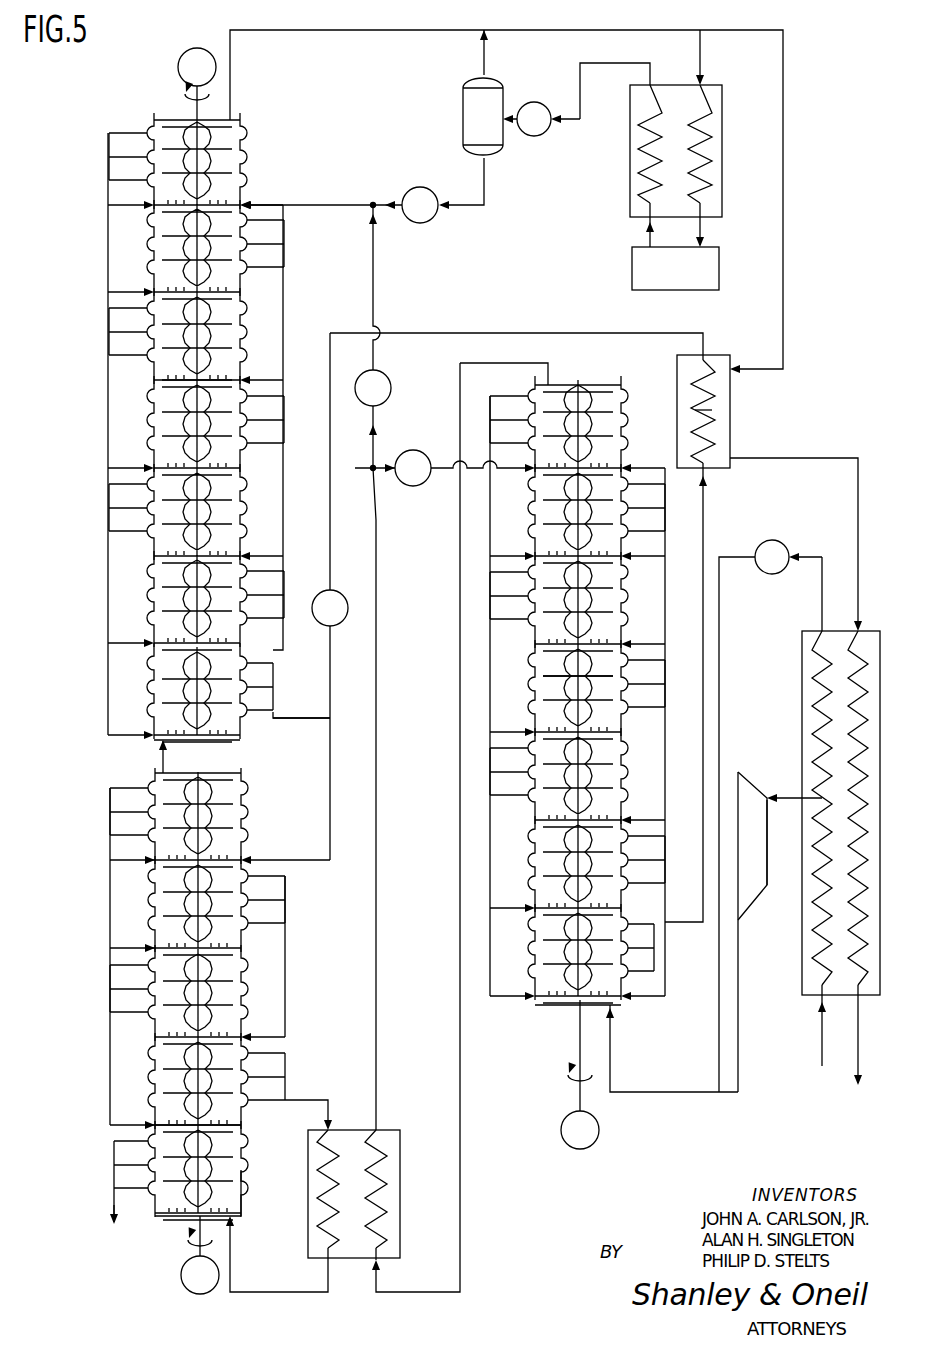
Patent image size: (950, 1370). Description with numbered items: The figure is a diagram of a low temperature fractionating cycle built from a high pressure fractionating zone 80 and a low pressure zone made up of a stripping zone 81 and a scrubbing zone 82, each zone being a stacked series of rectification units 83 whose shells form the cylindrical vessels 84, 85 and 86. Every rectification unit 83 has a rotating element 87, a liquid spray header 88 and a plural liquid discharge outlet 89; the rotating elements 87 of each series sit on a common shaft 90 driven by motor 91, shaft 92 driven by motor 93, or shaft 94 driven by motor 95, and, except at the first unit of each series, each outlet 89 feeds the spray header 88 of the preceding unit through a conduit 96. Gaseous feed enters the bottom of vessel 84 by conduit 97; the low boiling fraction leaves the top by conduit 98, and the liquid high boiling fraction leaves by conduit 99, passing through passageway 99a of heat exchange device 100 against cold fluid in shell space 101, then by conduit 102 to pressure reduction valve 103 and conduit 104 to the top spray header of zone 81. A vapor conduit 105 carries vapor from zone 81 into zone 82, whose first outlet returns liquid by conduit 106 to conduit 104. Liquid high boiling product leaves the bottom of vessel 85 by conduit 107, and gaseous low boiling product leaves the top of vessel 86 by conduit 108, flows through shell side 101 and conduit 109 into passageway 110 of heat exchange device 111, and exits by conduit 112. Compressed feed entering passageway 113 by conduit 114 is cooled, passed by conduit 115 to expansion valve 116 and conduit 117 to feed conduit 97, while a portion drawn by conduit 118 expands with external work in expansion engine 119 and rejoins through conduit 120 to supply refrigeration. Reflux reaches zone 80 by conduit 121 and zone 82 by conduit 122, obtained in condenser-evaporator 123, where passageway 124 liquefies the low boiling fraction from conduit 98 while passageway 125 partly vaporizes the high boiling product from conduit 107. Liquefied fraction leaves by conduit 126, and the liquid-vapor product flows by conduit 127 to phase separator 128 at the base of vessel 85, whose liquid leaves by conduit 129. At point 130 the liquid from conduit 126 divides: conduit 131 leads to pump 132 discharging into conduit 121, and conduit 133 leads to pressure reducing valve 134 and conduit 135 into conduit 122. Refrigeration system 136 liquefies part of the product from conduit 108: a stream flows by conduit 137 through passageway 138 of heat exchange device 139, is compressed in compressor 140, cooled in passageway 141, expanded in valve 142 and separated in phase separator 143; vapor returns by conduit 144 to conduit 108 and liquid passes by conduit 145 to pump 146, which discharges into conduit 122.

The high pressure fractionating zone 80 is at (580, 378).
The stripping zone 81 is at (148, 774).
The scrubbing zone 82 is at (252, 158).
The rectification unit 83 is at (532, 955).
The cylindrical vessel 84 is at (545, 674).
The cylindrical vessel 85 is at (241, 1118).
The cylindrical vessel 86 is at (162, 378).
The rotating element 87 is at (570, 943).
The liquid spray header 88 is at (552, 994).
The plural liquid discharge outlet 89 is at (656, 970).
The common shaft 90 is at (578, 1043).
The motor 91 is at (563, 1122).
The common shaft 92 is at (188, 1236).
The motor 93 is at (181, 1278).
The common shaft 94 is at (187, 100).
The motor 95 is at (190, 49).
The conduit 96 is at (665, 975).
The conduit 97 is at (108, 890).
The conduit 98 is at (461, 1220).
The conduit 99 is at (703, 915).
The passageway 99a is at (712, 410).
The heat exchange device 100 is at (720, 354).
The shell space 101 is at (712, 425).
The conduit 102 is at (556, 333).
The pressure reduction valve 103 is at (336, 592).
The conduit 104 is at (345, 718).
The vapor conduit 105 is at (160, 758).
The conduit 106 is at (292, 720).
The conduit 107 is at (329, 1104).
The conduit 108 is at (784, 326).
The conduit 109 is at (840, 457).
The passageway 110 is at (858, 650).
The heat exchange device 111 is at (802, 692).
The conduit 112 is at (860, 1075).
The passageway 113 is at (812, 940).
The conduit 114 is at (822, 1045).
The conduit 115 is at (821, 585).
The expansion valve 116 is at (757, 552).
The conduit 117 is at (720, 642).
The conduit 118 is at (778, 795).
The expansion engine 119 is at (766, 882).
The conduit 120 is at (739, 1020).
The conduit 121 is at (444, 466).
The conduit 122 is at (335, 204).
The condenser-evaporator 123 is at (392, 1128).
The passageway 124 is at (388, 1172).
The passageway 125 is at (322, 1210).
The conduit 126 is at (377, 1050).
The conduit 127 is at (275, 1272).
The phase separator 128 is at (243, 1196).
The conduit 129 is at (112, 1206).
The point 130 is at (362, 468).
The conduit 131 is at (375, 478).
The pump 132 is at (420, 485).
The conduit 133 is at (374, 436).
The pressure reducing valve 134 is at (391, 390).
The conduit 135 is at (374, 282).
The refrigeration system 136 is at (648, 151).
The conduit 137 is at (701, 60).
The passageway 138 is at (708, 132).
The heat exchange device 139 is at (722, 178).
The compressor 140 is at (716, 282).
The passageway 141 is at (640, 195).
The valve 142 is at (545, 103).
The phase separator 143 is at (463, 120).
The conduit 144 is at (484, 60).
The conduit 145 is at (485, 192).
The pump 146 is at (435, 175).